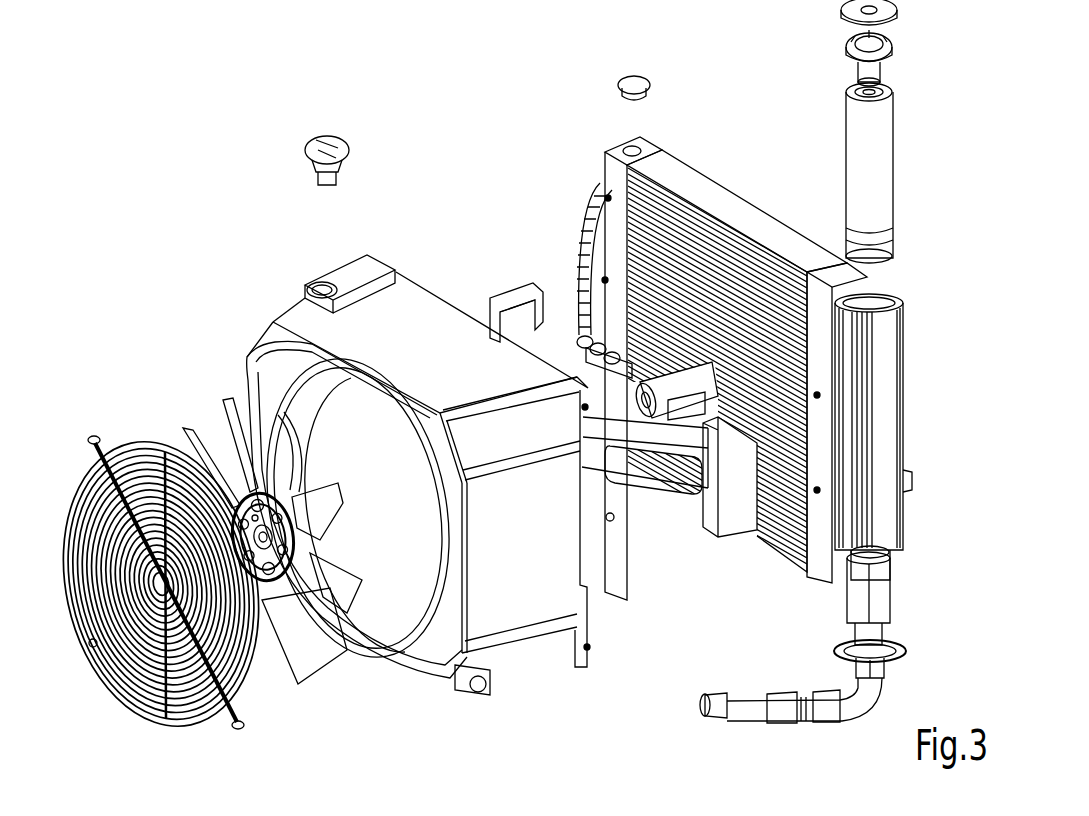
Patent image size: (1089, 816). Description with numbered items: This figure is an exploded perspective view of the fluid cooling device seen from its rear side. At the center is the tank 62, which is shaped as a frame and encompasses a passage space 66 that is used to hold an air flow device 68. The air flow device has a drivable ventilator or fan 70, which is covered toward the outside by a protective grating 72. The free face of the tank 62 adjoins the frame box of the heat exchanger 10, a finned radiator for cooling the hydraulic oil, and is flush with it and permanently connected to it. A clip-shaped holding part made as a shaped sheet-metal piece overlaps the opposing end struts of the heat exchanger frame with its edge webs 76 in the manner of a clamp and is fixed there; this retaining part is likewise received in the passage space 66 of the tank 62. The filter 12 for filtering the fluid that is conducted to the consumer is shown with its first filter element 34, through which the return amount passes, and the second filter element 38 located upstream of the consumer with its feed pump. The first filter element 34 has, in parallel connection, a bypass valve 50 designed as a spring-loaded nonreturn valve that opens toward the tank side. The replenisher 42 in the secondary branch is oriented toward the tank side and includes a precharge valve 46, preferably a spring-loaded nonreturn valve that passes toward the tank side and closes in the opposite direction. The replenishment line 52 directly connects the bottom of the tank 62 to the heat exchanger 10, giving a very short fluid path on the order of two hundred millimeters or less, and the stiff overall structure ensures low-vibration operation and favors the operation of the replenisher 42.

The heat exchanger 10 is at (699, 192).
The filter 12 is at (880, 412).
The first filter element 34 is at (875, 178).
The second filter element 38 is at (880, 607).
The replenisher 42 is at (892, 584).
The precharge valve 46 is at (903, 648).
The bypass valve 50 is at (893, 48).
The replenishment line 52 is at (830, 712).
The tank 62 is at (505, 598).
The passage space 66 is at (340, 405).
The air flow device 68 is at (322, 645).
The fan 70 is at (193, 428).
The protective grating 72 is at (200, 718).
The edge webs 76 is at (510, 298).